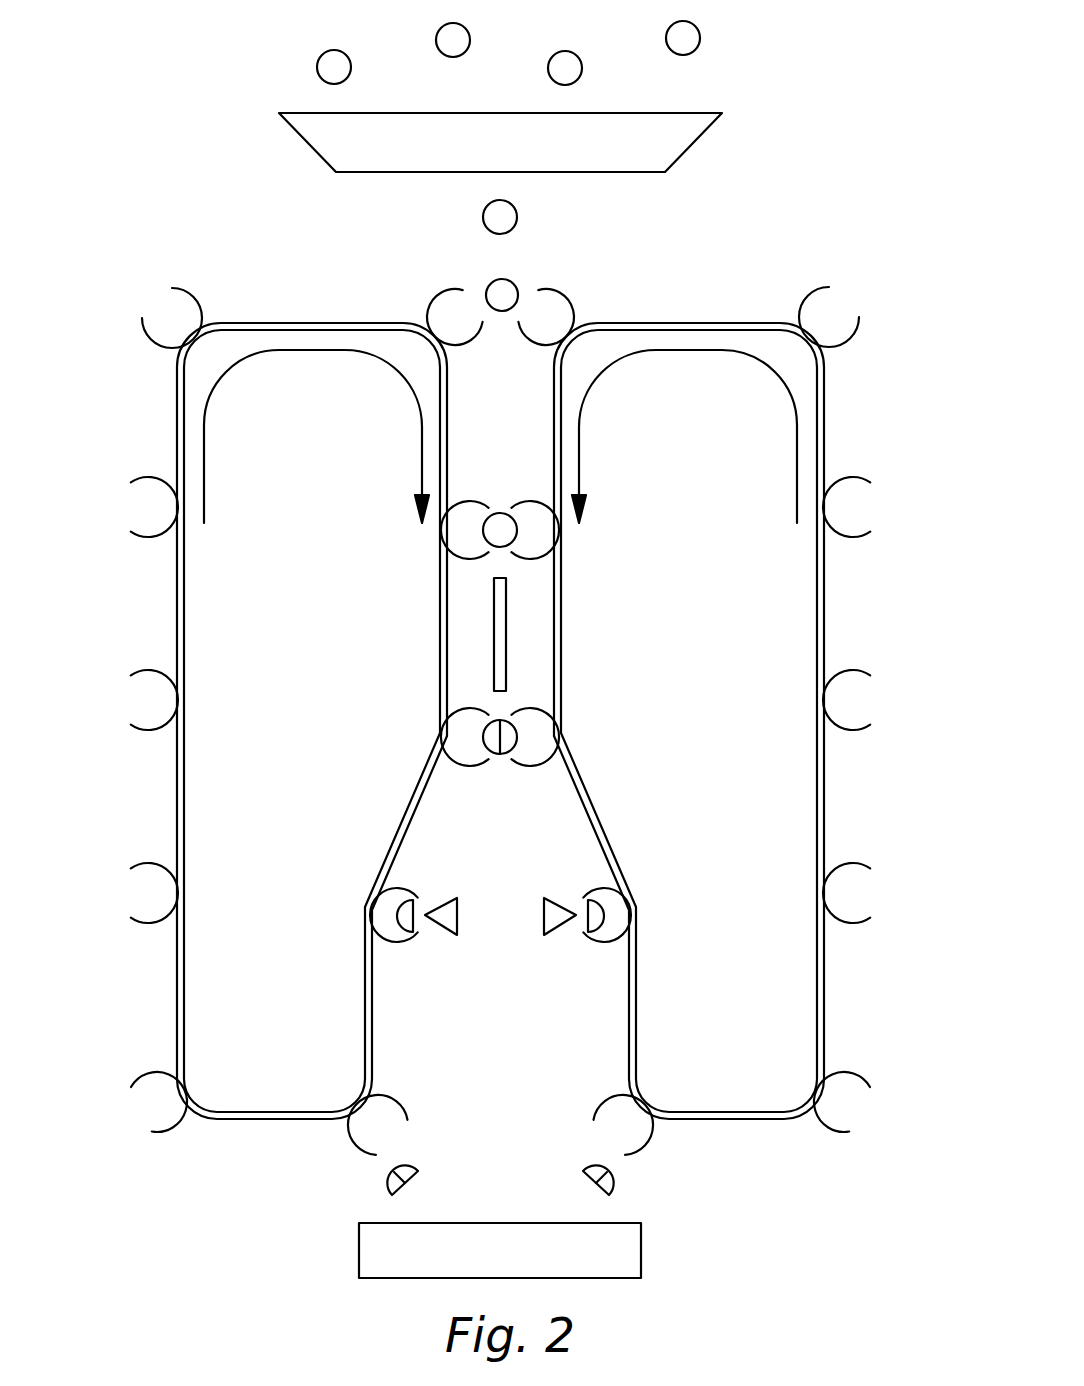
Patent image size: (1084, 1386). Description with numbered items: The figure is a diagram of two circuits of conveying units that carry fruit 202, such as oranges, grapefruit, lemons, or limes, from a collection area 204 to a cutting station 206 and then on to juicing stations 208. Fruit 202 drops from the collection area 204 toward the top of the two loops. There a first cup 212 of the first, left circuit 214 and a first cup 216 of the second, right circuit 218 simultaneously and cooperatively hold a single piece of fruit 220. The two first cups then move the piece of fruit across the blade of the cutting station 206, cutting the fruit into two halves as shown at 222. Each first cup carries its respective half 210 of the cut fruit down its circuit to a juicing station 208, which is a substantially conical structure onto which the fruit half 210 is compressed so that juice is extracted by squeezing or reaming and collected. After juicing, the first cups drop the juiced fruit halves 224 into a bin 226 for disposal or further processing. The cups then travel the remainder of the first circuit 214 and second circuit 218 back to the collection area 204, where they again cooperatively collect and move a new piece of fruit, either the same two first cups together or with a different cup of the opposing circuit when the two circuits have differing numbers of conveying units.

The fruit 202 is at (333, 67).
The collection area 204 is at (478, 151).
The cutting station 206 is at (502, 637).
The juicing station 208 is at (437, 908).
The fruit half 210 is at (408, 920).
The first cup of the first circuit 212 is at (441, 303).
The first circuit 214 is at (178, 633).
The first cup of the second circuit 216 is at (573, 302).
The second circuit 218 is at (823, 633).
The piece of fruit 220 is at (505, 293).
The cut fruit halves 222 is at (510, 738).
The juiced fruit halves 224 is at (392, 1180).
The bin 226 is at (478, 1264).